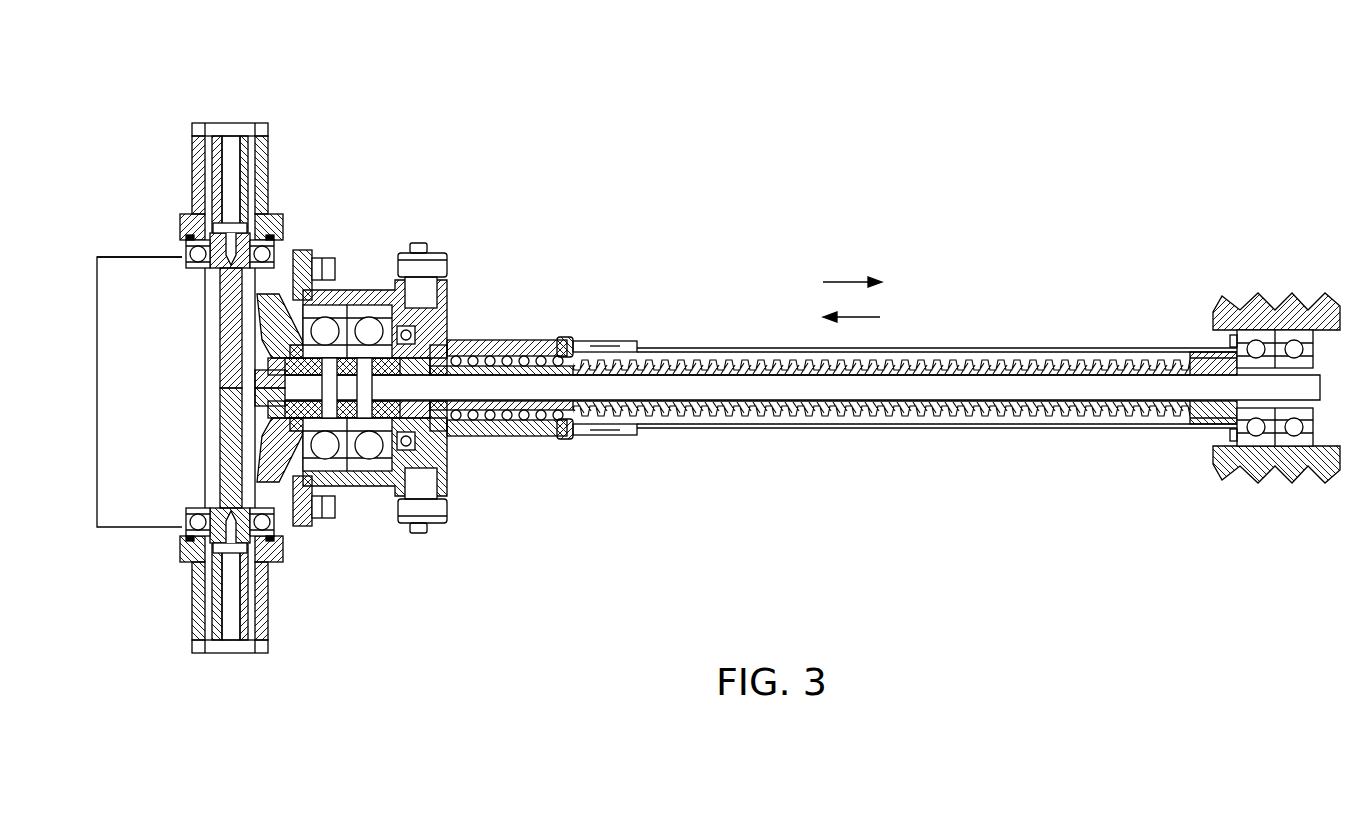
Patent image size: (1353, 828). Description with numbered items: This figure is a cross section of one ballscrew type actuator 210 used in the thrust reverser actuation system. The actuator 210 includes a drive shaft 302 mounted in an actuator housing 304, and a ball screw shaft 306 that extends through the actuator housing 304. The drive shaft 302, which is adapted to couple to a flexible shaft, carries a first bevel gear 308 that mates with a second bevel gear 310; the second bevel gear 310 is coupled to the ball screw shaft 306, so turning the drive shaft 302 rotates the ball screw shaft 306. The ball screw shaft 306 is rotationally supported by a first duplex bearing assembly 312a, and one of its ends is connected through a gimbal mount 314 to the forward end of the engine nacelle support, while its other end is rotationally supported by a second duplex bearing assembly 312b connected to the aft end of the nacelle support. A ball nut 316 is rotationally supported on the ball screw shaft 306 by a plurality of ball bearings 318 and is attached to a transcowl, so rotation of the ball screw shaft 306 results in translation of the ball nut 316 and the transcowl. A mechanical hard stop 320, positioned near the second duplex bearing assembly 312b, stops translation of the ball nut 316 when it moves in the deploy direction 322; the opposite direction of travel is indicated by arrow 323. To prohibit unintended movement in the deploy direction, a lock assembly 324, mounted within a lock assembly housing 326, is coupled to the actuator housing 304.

The actuator 210 is at (690, 140).
The drive shaft 302 is at (265, 624).
The actuator housing 304 is at (270, 150).
The ball screw shaft 306 is at (830, 425).
The first bevel gear 308 is at (262, 496).
The second bevel gear 310 is at (262, 326).
The first duplex bearing assembly 312a is at (395, 512).
The second duplex bearing assembly 312b is at (1285, 470).
The gimbal mount 314 is at (432, 247).
The ball nut 316 is at (522, 345).
The ball bearings 318 is at (525, 438).
The mechanical hard stop 320 is at (1196, 430).
The deploy direction 322 is at (845, 282).
The retract direction 323 is at (868, 317).
The lock assembly 324 is at (97, 473).
The lock assembly housing 326 is at (125, 257).